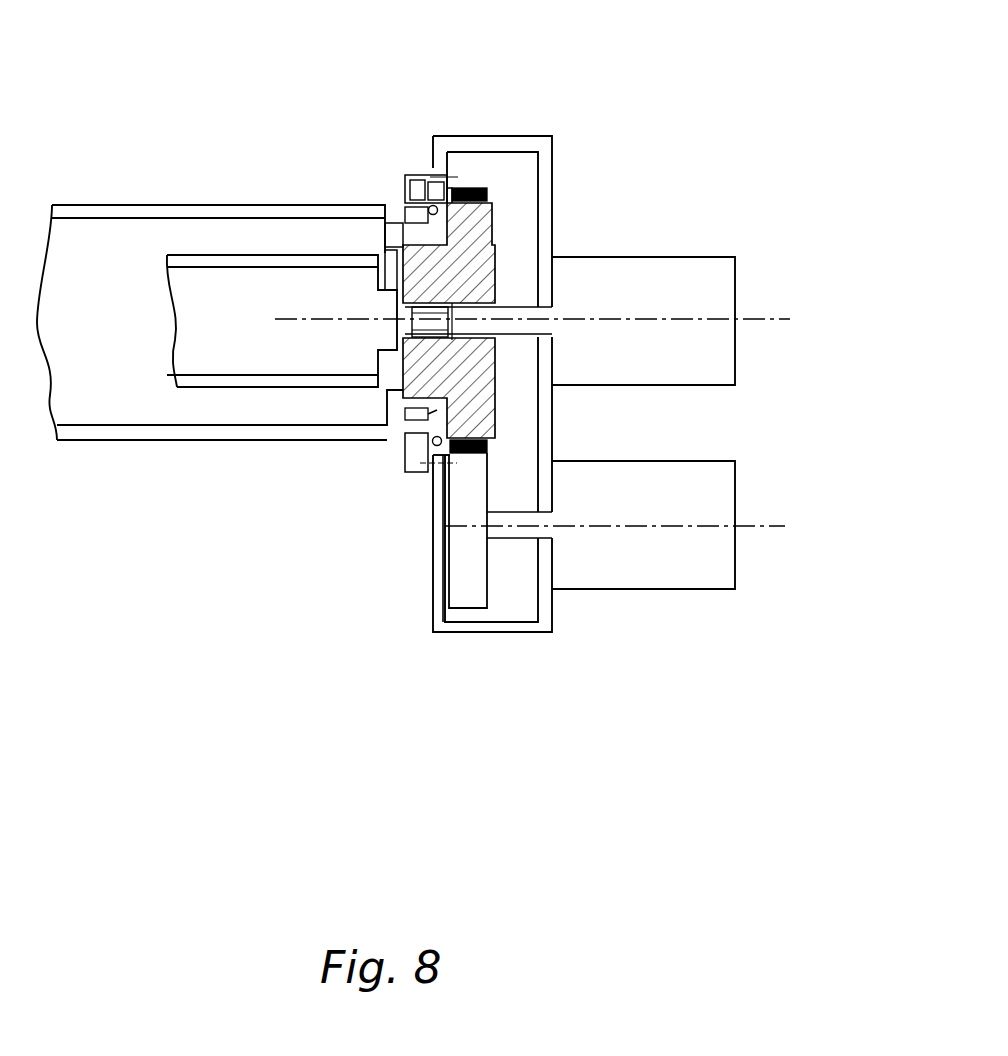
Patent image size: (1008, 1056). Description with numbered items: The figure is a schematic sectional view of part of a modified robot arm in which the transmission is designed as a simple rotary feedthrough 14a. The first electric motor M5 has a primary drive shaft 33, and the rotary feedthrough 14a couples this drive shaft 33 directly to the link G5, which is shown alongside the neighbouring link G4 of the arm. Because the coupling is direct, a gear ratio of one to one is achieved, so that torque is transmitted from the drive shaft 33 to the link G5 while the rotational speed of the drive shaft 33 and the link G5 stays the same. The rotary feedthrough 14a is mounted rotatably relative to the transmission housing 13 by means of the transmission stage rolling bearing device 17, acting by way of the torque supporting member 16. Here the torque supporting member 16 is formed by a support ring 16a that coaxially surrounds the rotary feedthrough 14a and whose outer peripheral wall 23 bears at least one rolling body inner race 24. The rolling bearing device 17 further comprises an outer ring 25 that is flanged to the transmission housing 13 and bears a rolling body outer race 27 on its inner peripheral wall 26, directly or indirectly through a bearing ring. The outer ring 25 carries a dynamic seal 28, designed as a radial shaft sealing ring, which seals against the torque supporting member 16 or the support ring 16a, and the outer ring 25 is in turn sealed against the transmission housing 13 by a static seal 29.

The transmission housing 13 is at (483, 627).
The rotary feedthrough 14a is at (482, 268).
The torque supporting member 16 is at (530, 352).
The support ring 16a is at (481, 217).
The transmission stage rolling bearing device 17 is at (431, 190).
The outer peripheral wall 23 is at (392, 232).
The rolling body inner race 24 is at (387, 222).
The outer ring 25 is at (407, 175).
The inner peripheral wall 26 is at (393, 204).
The rolling body outer race 27 is at (430, 199).
The dynamic seal 28 is at (407, 193).
The static seal 29 is at (442, 190).
The primary drive shaft 33 is at (503, 318).
The first electric motor M5 is at (700, 270).
The link G4 is at (123, 433).
The link G5 is at (212, 383).